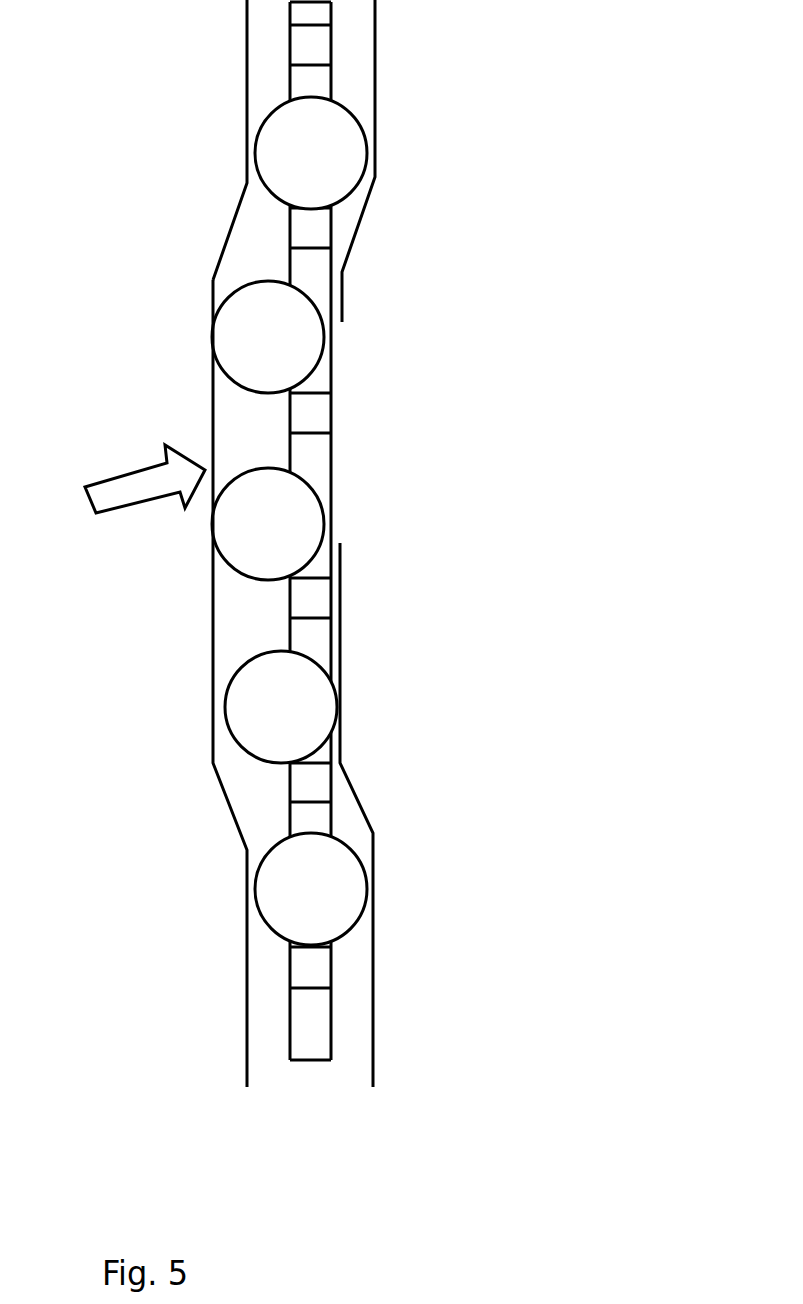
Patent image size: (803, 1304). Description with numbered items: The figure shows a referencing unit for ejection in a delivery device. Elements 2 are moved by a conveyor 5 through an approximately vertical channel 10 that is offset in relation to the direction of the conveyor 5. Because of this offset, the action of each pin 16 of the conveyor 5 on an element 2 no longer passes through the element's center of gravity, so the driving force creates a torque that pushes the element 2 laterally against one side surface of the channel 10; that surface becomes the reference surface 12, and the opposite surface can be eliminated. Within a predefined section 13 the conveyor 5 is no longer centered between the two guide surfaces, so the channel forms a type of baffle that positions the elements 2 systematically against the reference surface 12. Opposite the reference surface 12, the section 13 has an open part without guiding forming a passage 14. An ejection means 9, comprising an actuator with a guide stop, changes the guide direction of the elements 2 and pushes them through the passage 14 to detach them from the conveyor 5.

The element 2 is at (333, 127).
The conveyor 5 is at (294, 823).
The ejection means 9 is at (103, 500).
The channel 10 is at (172, 214).
The reference surface 12 is at (204, 620).
The section 13 is at (608, 1019).
The passage 14 is at (403, 380).
The pin 16 is at (314, 958).